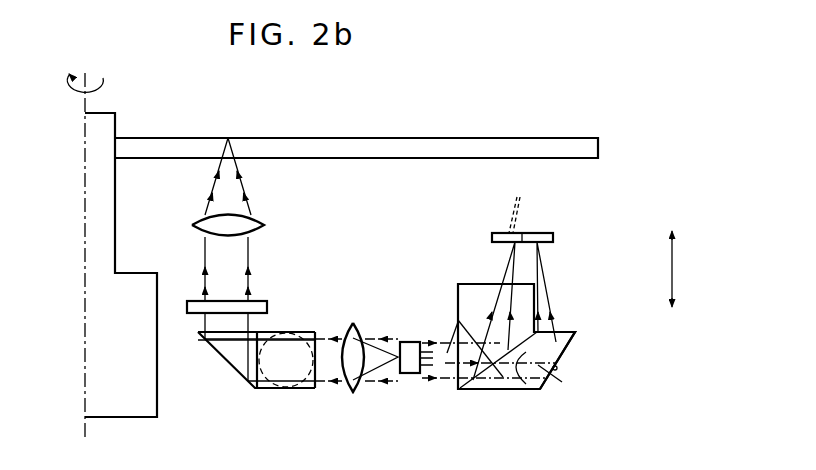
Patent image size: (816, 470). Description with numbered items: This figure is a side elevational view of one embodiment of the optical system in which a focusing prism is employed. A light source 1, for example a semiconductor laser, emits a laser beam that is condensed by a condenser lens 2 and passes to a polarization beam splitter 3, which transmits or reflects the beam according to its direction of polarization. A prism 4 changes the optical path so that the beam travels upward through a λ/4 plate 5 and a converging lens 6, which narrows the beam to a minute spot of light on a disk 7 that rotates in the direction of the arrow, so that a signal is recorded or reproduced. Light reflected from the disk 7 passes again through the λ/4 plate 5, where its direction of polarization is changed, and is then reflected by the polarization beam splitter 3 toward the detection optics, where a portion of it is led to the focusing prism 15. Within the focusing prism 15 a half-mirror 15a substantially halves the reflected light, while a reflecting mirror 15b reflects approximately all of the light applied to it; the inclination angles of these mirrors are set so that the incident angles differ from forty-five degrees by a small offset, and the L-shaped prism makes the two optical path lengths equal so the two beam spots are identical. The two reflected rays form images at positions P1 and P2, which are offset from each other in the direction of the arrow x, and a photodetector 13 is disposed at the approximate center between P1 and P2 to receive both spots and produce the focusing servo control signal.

The light source 1 is at (417, 375).
The condenser lens 2 is at (352, 393).
The polarization beam splitter 3 is at (287, 390).
The prism 4 is at (237, 372).
The λ/4 plate 5 is at (267, 302).
The converging lens 6 is at (265, 224).
The disk 7 is at (583, 139).
The photodetector 13 is at (555, 238).
The focusing prism 15 is at (514, 392).
The half-mirror 15a is at (478, 390).
The reflecting mirror 15b is at (580, 337).
The image-forming position P1 is at (512, 190).
The image-forming position P2 is at (541, 263).
The direction of arrow X x is at (687, 269).